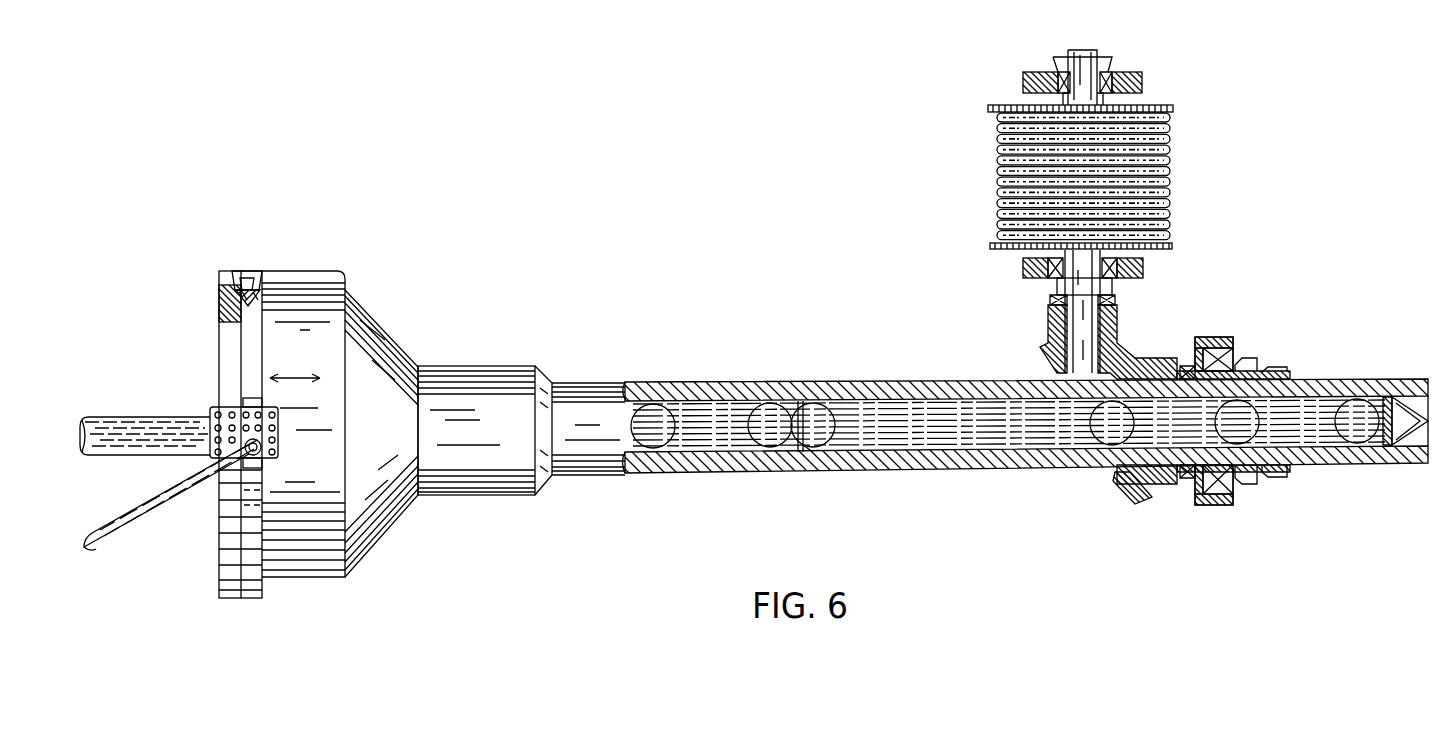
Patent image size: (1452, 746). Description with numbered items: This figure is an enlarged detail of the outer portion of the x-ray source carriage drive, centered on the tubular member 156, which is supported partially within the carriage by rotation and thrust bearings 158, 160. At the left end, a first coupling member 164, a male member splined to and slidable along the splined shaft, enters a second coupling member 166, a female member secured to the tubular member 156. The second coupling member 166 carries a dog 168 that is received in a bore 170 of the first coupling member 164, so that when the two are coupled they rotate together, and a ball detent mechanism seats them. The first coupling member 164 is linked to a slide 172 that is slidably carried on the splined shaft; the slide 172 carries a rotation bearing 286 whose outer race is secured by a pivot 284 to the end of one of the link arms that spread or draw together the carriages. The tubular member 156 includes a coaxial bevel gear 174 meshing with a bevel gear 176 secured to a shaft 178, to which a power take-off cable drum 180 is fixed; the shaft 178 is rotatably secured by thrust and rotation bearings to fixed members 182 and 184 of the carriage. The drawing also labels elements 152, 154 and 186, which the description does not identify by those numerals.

The balls 152 is at (818, 420).
The inner rod 154 is at (929, 408).
The tubular member 156 is at (770, 400).
The rotation and thrust bearing 158 is at (1228, 358).
The rotation and thrust bearing 160 is at (1185, 366).
The first coupling member 164 is at (221, 312).
The second coupling member 166 is at (394, 343).
The dog 168 is at (258, 276).
The bore 170 is at (245, 270).
The slide 172 is at (213, 407).
The coaxial bevel gear 174 is at (1158, 486).
The bevel gear 176 is at (1050, 318).
The shaft 178 is at (1118, 319).
The power take-off cable drum 180 is at (1170, 106).
The fixed member 182 is at (1030, 72).
The fixed member 184 is at (1003, 262).
The spring 186 is at (1172, 170).
The pivot 284 is at (279, 452).
The rotation bearing 286 is at (250, 400).